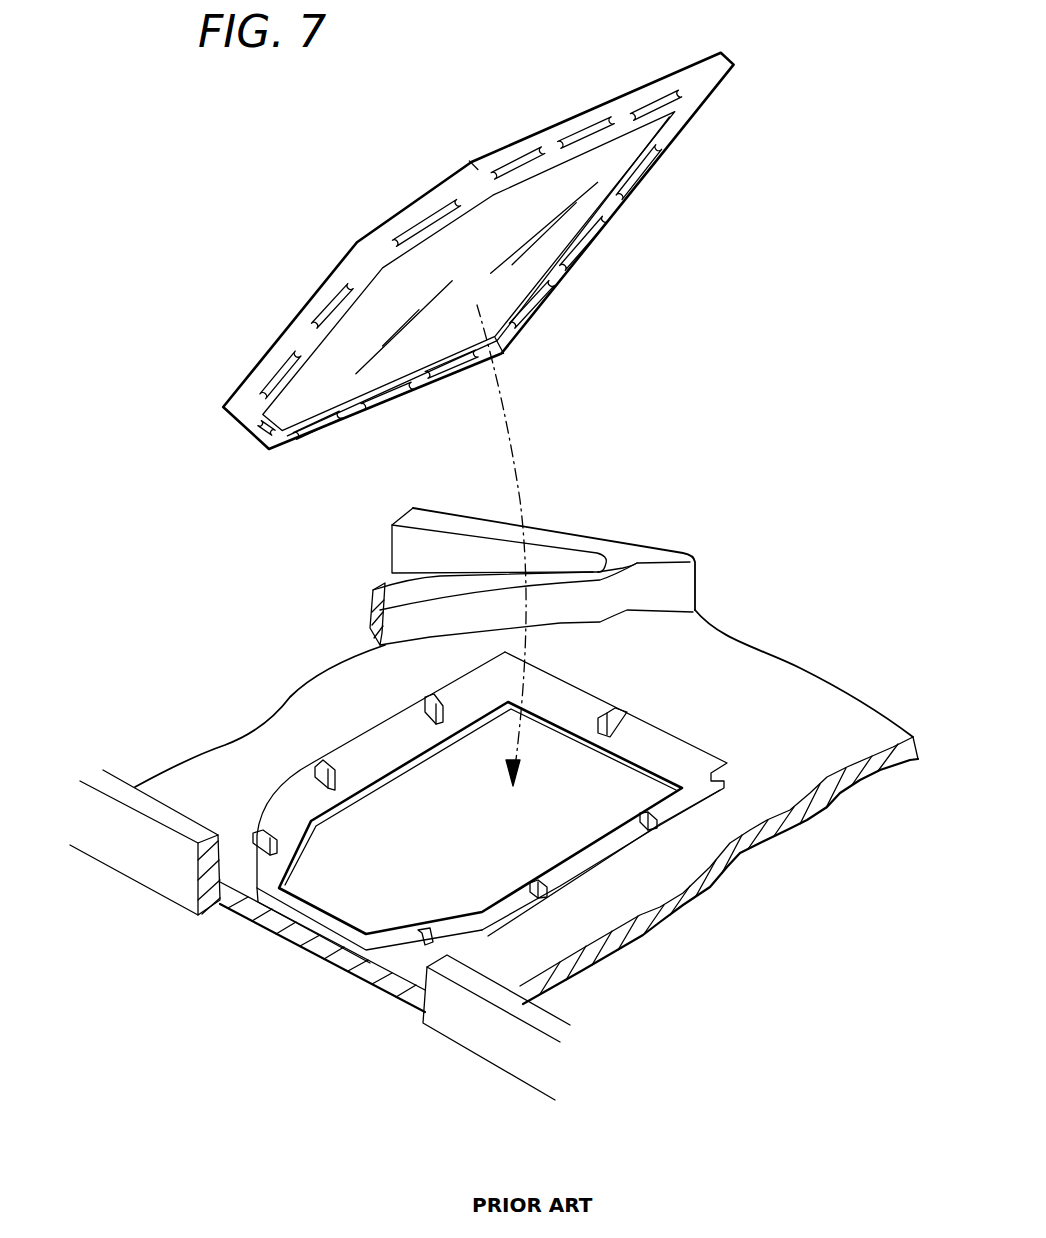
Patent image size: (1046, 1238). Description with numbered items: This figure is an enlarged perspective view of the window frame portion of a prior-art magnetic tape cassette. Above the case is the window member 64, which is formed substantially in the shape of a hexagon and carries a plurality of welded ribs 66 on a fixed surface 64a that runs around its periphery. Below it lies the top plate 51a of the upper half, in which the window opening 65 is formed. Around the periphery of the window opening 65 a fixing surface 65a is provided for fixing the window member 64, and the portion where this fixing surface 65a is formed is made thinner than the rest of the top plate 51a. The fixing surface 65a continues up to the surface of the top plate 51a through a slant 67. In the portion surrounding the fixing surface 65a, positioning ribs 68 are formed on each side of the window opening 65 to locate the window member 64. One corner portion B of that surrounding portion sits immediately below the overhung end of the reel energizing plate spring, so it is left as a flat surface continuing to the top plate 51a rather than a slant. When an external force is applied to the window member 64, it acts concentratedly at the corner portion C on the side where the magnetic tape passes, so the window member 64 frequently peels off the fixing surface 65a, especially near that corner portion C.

The window member 64 is at (494, 419).
The fixed surface 64a is at (690, 93).
The welded ribs 66 is at (525, 163).
The window opening 65 is at (526, 783).
The fixing surface 65a is at (560, 720).
The slant 67 is at (675, 758).
The positioning ribs 68 is at (430, 697).
The top plate 51a is at (260, 757).
The corner portion B is at (745, 755).
The corner portion C is at (540, 638).